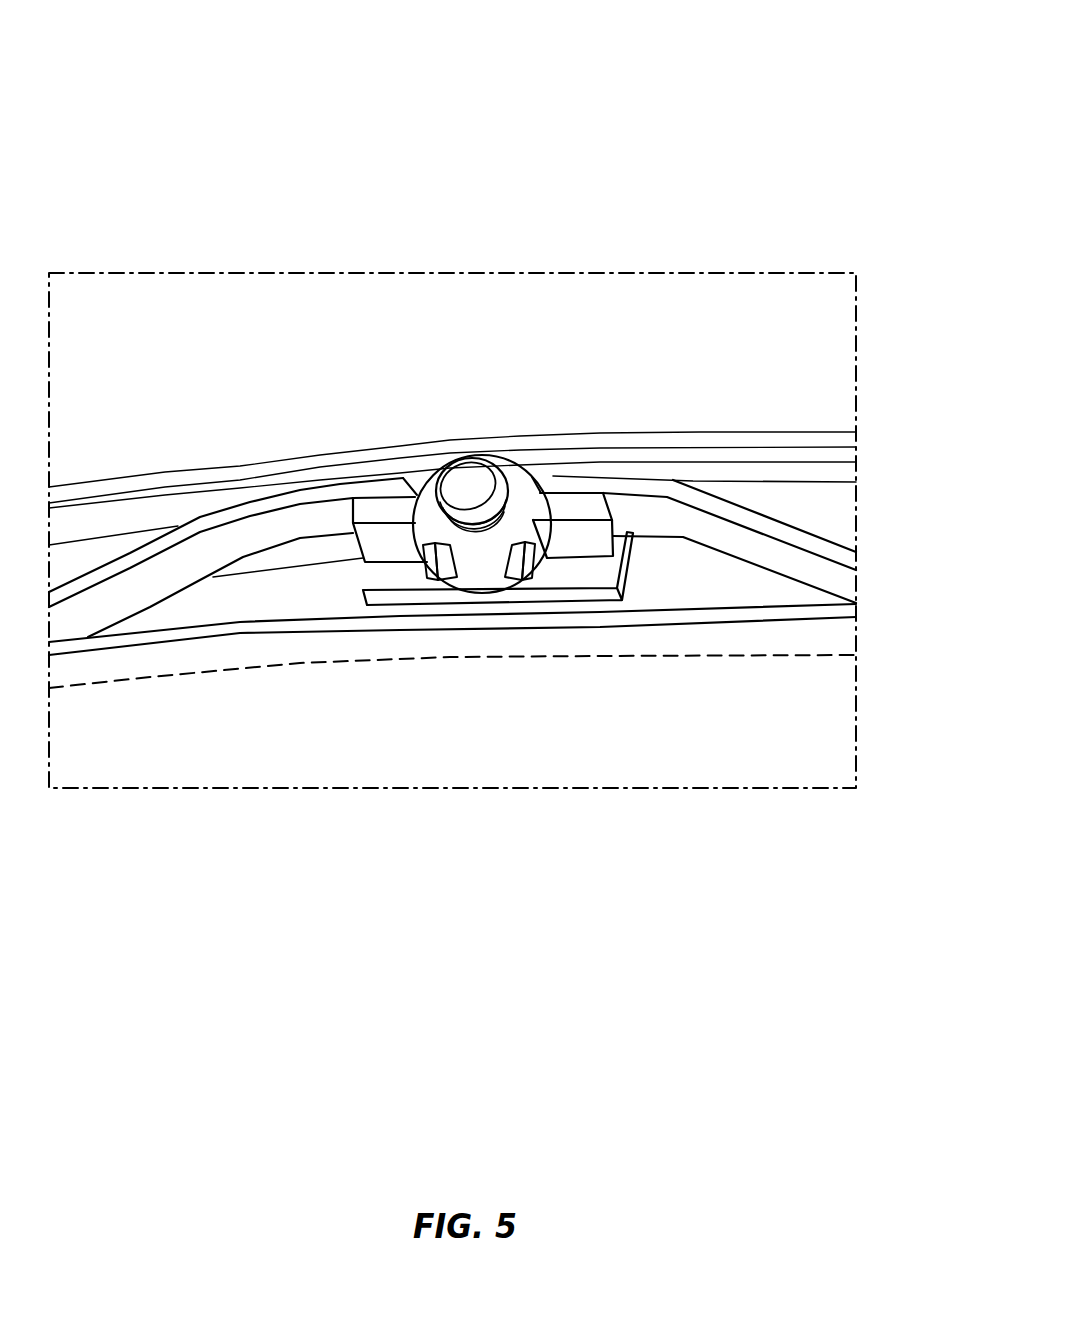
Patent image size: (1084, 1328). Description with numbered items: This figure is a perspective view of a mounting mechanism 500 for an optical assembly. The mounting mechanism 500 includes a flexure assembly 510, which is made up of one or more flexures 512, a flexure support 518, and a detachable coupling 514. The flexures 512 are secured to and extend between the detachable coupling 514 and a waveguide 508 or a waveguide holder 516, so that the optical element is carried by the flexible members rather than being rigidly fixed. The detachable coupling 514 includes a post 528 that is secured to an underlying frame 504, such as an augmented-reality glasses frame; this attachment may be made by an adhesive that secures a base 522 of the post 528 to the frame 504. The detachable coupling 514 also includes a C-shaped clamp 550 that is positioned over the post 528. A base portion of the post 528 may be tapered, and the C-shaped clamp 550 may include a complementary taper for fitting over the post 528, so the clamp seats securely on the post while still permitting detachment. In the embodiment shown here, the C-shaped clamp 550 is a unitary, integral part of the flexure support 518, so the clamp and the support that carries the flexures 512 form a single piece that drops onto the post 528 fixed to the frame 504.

The mounting mechanism 500 is at (118, 82).
The frame 504 is at (110, 513).
The waveguide 508 is at (410, 722).
The flexure assembly 510 is at (392, 316).
The flexures 512 is at (223, 513).
The detachable coupling 514 is at (657, 214).
The waveguide holder 516 is at (856, 608).
The flexure support 518 is at (391, 513).
The base 522 is at (575, 582).
The post 528 is at (457, 480).
The C-shaped clamp 550 is at (528, 495).